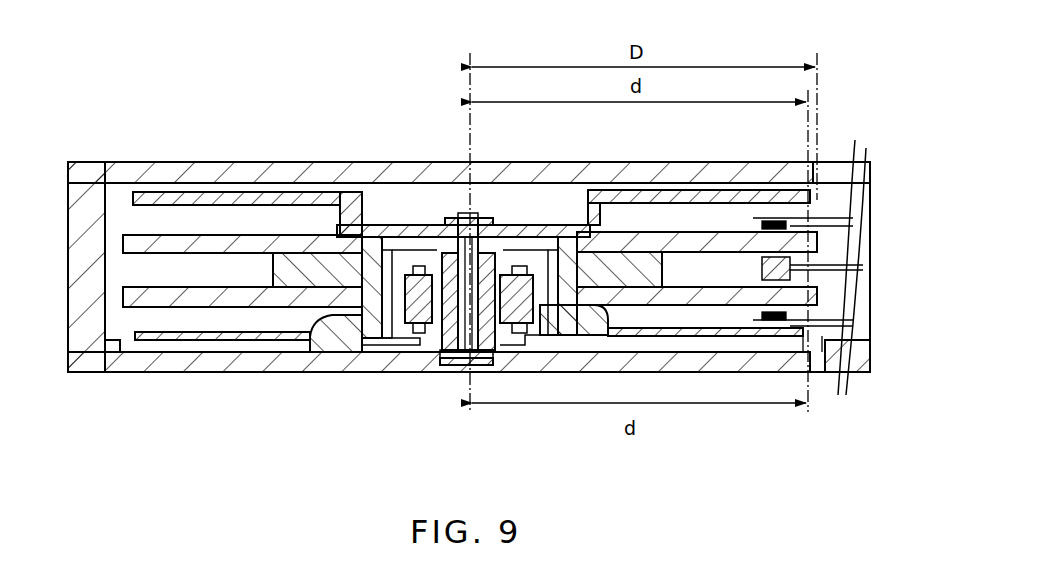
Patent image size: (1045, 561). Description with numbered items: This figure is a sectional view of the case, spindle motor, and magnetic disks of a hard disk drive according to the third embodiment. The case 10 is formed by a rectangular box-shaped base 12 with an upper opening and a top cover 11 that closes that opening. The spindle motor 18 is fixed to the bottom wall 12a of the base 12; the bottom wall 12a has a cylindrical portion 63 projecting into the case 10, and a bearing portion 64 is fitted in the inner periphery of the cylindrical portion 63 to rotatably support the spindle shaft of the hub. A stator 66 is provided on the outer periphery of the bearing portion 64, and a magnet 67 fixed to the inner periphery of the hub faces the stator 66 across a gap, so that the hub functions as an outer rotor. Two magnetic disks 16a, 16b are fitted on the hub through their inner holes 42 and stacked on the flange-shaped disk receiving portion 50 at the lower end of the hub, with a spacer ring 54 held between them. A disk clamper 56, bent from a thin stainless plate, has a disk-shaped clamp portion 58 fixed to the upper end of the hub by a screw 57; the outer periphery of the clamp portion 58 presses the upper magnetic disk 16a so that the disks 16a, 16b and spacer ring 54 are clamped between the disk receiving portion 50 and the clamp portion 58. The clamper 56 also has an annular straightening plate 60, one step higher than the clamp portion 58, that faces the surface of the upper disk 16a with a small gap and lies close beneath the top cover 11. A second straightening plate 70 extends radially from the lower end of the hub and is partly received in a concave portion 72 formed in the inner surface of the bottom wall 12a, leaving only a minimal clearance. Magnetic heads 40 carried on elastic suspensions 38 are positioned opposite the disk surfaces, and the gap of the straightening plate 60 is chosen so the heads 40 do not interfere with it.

The case 10 is at (160, 157).
The top cover 11 is at (672, 163).
The base 12 is at (120, 373).
The bottom wall 12a is at (862, 373).
The upper magnetic disk 16a is at (178, 242).
The lower magnetic disk 16b is at (142, 287).
The spindle motor 18 is at (448, 287).
The suspension 38 is at (841, 268).
The magnetic head 40 is at (755, 218).
The inner hole 42 is at (370, 240).
The disk receiving portion 50 is at (318, 322).
The spacer ring 54 is at (275, 268).
The disk clamper 56 is at (390, 226).
The screw 57 is at (456, 216).
The clamp portion 58 is at (352, 224).
The straightening plate 60 is at (245, 194).
The cylindrical portion 63 is at (496, 366).
The bearing portion 64 is at (440, 350).
The stator 66 is at (418, 285).
The magnet 67 is at (448, 350).
The straightening plate 70 is at (210, 340).
The concave portion 72 is at (152, 373).